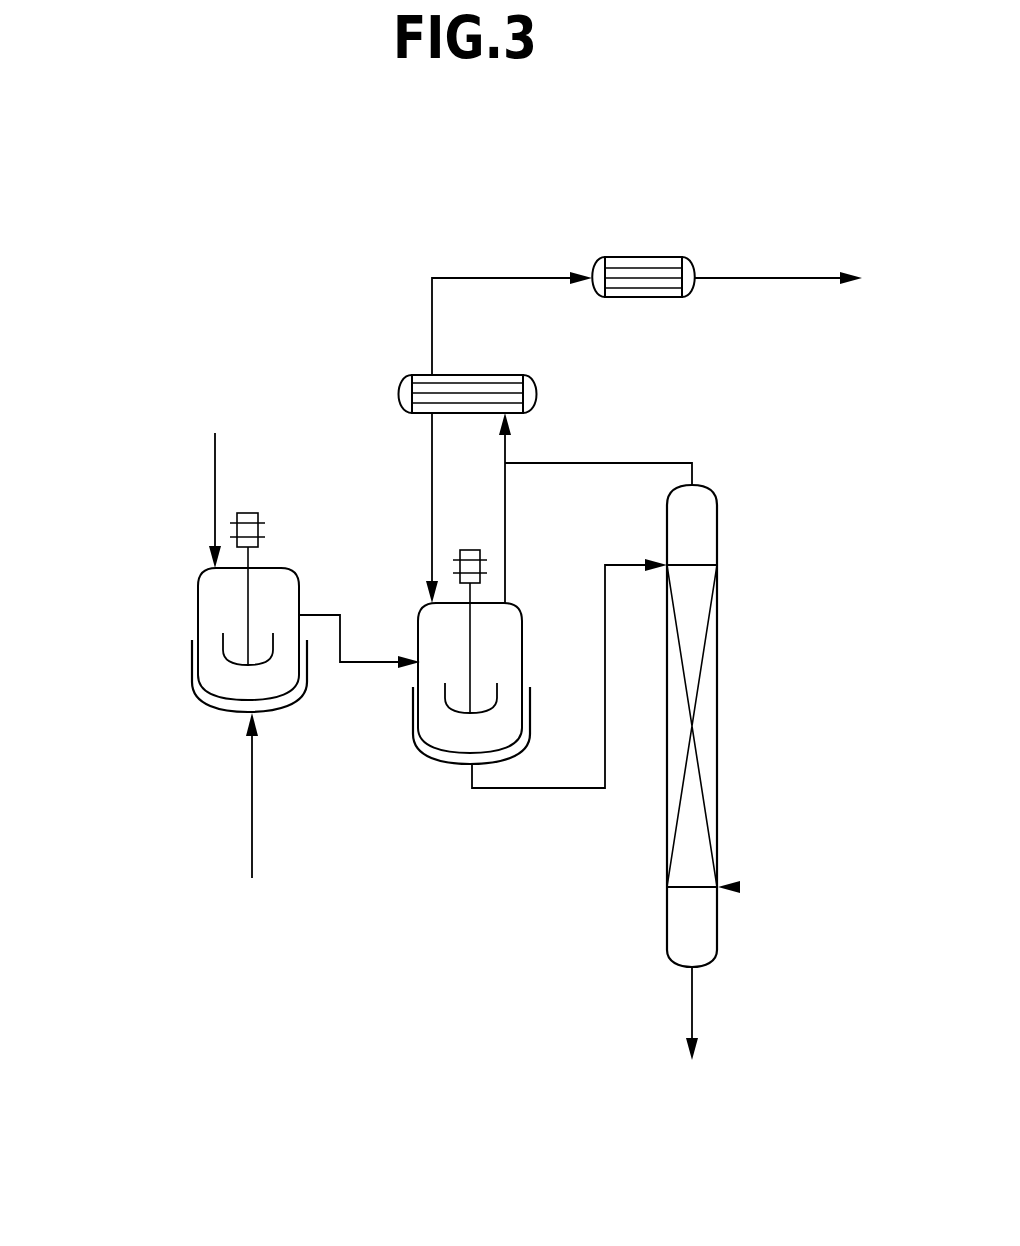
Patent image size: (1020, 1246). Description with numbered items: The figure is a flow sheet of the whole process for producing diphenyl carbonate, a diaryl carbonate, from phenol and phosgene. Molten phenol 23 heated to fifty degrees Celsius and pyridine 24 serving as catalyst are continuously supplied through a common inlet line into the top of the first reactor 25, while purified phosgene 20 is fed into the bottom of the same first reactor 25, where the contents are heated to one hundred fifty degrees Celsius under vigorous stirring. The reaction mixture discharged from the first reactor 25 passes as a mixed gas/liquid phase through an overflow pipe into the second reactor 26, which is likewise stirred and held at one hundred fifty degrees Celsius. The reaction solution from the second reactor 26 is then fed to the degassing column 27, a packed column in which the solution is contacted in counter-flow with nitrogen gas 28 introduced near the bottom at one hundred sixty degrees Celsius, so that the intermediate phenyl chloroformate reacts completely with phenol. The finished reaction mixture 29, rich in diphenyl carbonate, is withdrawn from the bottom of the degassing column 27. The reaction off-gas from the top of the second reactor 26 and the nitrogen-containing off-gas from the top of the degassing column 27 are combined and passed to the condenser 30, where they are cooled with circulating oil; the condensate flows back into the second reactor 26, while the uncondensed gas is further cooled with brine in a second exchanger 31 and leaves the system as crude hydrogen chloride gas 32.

The purified phosgene 20 is at (252, 878).
The molten phenol 23 is at (215, 433).
The pyridine 24 is at (215, 492).
The first reactor 25 is at (306, 631).
The second reactor 26 is at (540, 621).
The degassing column 27 is at (638, 715).
The nitrogen gas 28 is at (738, 887).
The reaction mixture 29 is at (703, 1035).
The condenser 30 is at (496, 342).
The heat exchanger (condenser) 31 is at (643, 298).
The crude hydrogen chloride gas 32 is at (800, 279).